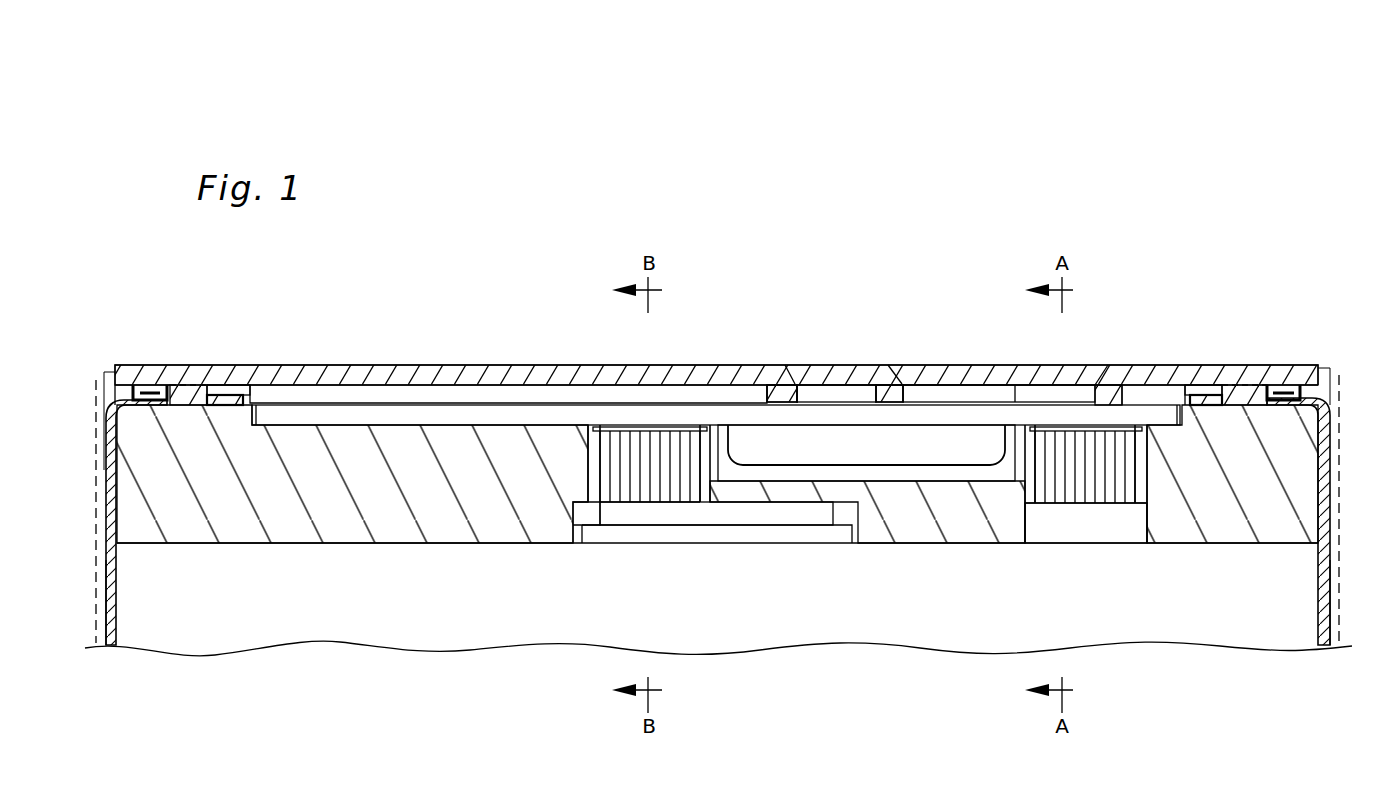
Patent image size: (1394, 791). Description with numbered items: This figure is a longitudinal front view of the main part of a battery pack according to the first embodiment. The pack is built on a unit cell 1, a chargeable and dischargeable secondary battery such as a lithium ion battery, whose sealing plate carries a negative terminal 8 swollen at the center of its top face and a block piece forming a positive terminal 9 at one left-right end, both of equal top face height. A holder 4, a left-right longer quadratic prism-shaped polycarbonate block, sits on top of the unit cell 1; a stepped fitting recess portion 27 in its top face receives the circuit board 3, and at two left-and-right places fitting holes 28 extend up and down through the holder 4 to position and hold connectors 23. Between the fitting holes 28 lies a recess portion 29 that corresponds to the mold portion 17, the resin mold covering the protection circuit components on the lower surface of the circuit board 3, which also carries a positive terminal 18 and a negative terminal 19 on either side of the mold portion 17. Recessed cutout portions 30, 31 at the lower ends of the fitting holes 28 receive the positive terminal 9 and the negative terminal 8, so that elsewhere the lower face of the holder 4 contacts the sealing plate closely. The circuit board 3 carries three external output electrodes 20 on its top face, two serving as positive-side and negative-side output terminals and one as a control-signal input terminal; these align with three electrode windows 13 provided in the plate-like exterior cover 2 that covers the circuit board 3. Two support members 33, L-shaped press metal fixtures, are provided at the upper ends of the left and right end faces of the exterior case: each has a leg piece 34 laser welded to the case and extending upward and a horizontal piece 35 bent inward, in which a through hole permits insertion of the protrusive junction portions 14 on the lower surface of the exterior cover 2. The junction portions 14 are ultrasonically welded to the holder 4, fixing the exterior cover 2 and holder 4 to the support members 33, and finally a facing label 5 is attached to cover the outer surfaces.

The unit cell 1 is at (383, 620).
The exterior cover 2 is at (556, 365).
The circuit board 3 is at (468, 415).
The holder 4 is at (287, 527).
The facing label 5 is at (100, 442).
The negative terminal 8 is at (768, 510).
The positive terminal 9 is at (1065, 520).
The electrode window 13 is at (928, 365).
The junction portion 14 is at (180, 397).
The mold portion 17 is at (905, 447).
The positive terminal 18 is at (1093, 437).
The negative terminal 19 is at (645, 447).
The external output electrode 20 is at (822, 368).
The connector 23 is at (657, 492).
The fitting recess portion 27 is at (257, 418).
The fitting hole 28 is at (707, 477).
The recess portion 29 is at (1003, 465).
The recessed cutout portion 30 is at (1028, 522).
The recessed cutout portion 31 is at (580, 512).
The support member 33 is at (98, 510).
The leg piece 34 is at (105, 622).
The horizontal piece 35 is at (223, 397).